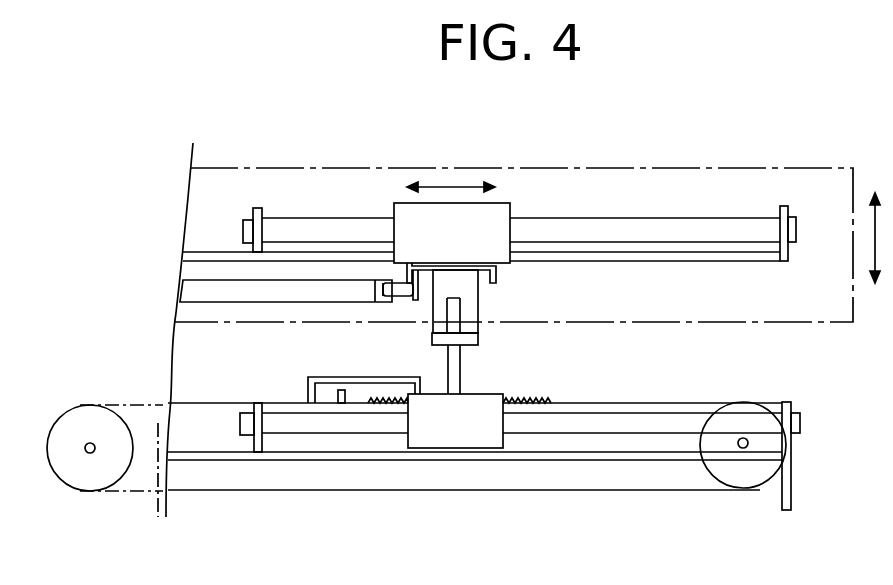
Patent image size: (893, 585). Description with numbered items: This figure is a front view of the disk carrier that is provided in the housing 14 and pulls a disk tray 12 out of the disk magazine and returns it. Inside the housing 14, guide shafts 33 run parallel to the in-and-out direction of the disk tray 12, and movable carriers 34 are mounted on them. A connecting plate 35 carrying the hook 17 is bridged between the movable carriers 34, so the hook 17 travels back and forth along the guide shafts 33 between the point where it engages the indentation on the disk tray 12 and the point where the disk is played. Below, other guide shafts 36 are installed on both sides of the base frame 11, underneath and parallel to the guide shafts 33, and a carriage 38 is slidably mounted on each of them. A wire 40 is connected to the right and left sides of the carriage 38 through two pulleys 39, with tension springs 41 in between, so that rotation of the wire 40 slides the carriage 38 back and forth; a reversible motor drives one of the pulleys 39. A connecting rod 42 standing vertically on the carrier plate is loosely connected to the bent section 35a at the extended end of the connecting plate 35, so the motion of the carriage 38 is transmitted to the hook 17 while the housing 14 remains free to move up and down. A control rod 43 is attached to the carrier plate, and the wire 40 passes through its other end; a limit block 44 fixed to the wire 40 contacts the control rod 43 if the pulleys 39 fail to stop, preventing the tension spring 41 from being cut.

The base frame 11 is at (792, 487).
The disk tray 12 is at (193, 292).
The housing 14 is at (708, 167).
The hook 17 is at (402, 298).
The guide shaft 33 is at (647, 232).
The movable carrier 34 is at (497, 215).
The connecting plate 35 is at (496, 272).
The bent section of extended end 35a is at (478, 336).
The guide shaft 36 is at (357, 427).
The carriage 38 is at (445, 438).
The pulley 39 is at (85, 492).
The wire 40 is at (262, 491).
The tension spring 41 is at (392, 398).
The connecting rod 42 is at (458, 362).
The control rod 43 is at (350, 377).
The limit block 44 is at (338, 397).